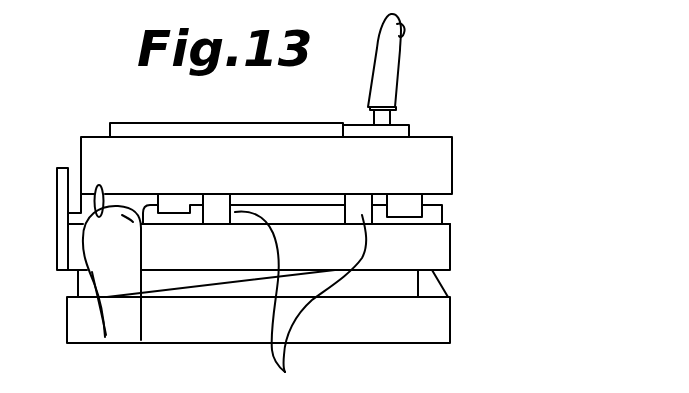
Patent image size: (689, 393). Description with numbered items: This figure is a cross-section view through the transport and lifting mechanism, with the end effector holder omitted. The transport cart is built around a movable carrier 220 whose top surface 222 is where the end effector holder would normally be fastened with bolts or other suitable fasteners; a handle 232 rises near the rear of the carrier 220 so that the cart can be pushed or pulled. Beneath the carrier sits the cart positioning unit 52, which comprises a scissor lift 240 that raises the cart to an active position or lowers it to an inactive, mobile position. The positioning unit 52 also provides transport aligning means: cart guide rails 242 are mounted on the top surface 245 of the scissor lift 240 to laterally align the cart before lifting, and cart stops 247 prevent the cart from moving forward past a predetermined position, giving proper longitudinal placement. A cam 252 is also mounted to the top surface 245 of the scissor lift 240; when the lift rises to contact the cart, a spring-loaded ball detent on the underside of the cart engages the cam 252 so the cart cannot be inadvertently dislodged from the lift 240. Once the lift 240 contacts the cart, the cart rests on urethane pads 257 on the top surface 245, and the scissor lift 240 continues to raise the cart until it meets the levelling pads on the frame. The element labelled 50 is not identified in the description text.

The top surface 222 is at (440, 137).
The handle 232 is at (407, 72).
The movable carrier 220 is at (433, 162).
The cart stops 247 is at (63, 168).
The cart guide rails 242 is at (435, 213).
The top surface 245 is at (450, 223).
The scissor lift 240 is at (440, 248).
The cart positioning unit 52 is at (440, 315).
The cable 50 is at (105, 337).
The cam 252 is at (141, 340).
The urethane pads 257 is at (289, 366).